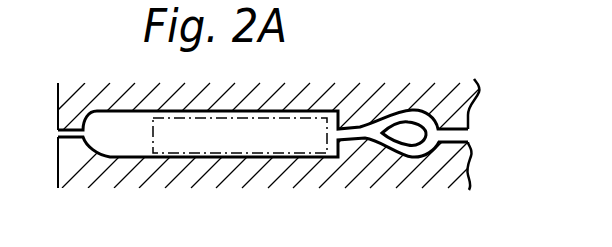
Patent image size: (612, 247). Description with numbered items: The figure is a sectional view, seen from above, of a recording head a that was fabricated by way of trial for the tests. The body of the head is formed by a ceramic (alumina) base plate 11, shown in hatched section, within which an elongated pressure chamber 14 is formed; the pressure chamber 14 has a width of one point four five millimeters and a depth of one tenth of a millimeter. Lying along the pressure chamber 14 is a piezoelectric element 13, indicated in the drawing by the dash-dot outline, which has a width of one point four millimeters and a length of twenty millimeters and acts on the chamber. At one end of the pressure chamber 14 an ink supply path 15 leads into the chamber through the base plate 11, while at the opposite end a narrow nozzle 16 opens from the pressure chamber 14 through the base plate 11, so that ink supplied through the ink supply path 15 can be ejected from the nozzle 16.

The ceramic base plate 11 is at (290, 172).
The piezoelectric element 13 is at (248, 157).
The pressure chamber 14 is at (190, 135).
The ink supply path 15 is at (412, 158).
The nozzle 16 is at (69, 138).
The recording head a is at (442, 60).